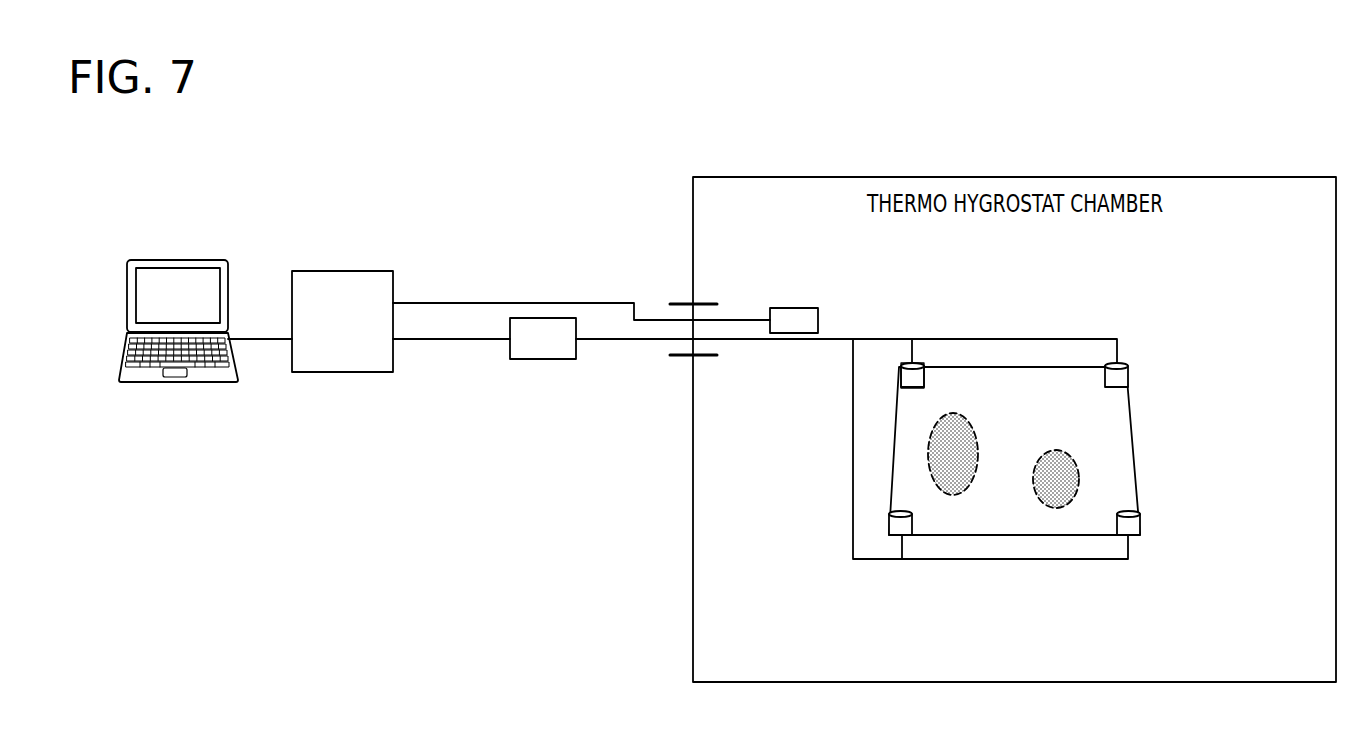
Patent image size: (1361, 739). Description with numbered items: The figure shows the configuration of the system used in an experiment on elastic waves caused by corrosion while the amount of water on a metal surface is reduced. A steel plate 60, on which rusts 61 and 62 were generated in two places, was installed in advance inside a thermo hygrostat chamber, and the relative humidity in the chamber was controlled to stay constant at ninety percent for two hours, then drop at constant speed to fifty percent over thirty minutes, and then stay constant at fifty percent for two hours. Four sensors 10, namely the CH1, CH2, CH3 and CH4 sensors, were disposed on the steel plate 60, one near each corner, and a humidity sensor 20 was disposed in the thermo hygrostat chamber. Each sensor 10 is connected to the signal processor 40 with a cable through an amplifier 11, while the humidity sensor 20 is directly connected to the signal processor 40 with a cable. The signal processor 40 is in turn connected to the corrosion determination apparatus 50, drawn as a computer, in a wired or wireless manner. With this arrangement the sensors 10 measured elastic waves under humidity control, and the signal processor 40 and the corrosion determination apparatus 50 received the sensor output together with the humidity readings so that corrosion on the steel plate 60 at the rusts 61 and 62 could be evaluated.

The sensor 10 is at (921, 358).
The amplifier 11 is at (543, 360).
The humidity sensor 20 is at (791, 336).
The signal processor 40 is at (343, 270).
The corrosion determination apparatus 50 is at (178, 260).
The steel plate 60 is at (1135, 448).
The rust 61 is at (928, 448).
The rust 62 is at (1057, 508).
The CH1 sensor CH1 is at (905, 362).
The CH2 sensor CH2 is at (1128, 362).
The CH3 sensor CH3 is at (1142, 521).
The CH4 sensor CH4 is at (889, 521).